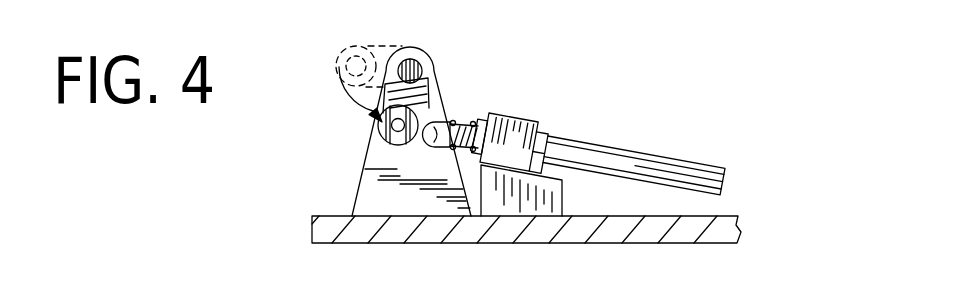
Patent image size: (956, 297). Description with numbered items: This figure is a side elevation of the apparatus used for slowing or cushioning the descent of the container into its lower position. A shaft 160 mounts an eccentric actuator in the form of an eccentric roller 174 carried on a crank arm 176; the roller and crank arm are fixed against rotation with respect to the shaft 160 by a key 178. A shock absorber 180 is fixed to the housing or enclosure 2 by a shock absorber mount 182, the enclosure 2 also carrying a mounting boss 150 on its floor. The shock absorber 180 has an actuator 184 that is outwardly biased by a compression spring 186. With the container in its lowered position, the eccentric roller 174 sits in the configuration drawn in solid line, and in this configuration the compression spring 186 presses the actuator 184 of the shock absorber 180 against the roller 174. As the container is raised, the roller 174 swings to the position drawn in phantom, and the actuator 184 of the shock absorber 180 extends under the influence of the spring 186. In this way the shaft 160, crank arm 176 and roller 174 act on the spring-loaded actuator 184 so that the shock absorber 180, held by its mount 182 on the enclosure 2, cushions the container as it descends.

The enclosure 2 is at (321, 223).
The mounting boss 150 is at (375, 190).
The shaft 160 is at (409, 60).
The eccentric roller 174 is at (346, 60).
The crank arm 176 is at (423, 90).
The key 178 is at (416, 64).
The shock absorber 180 is at (620, 162).
The shock absorber mount 182 is at (549, 199).
The actuator 184 is at (439, 138).
The compression spring 186 is at (464, 118).